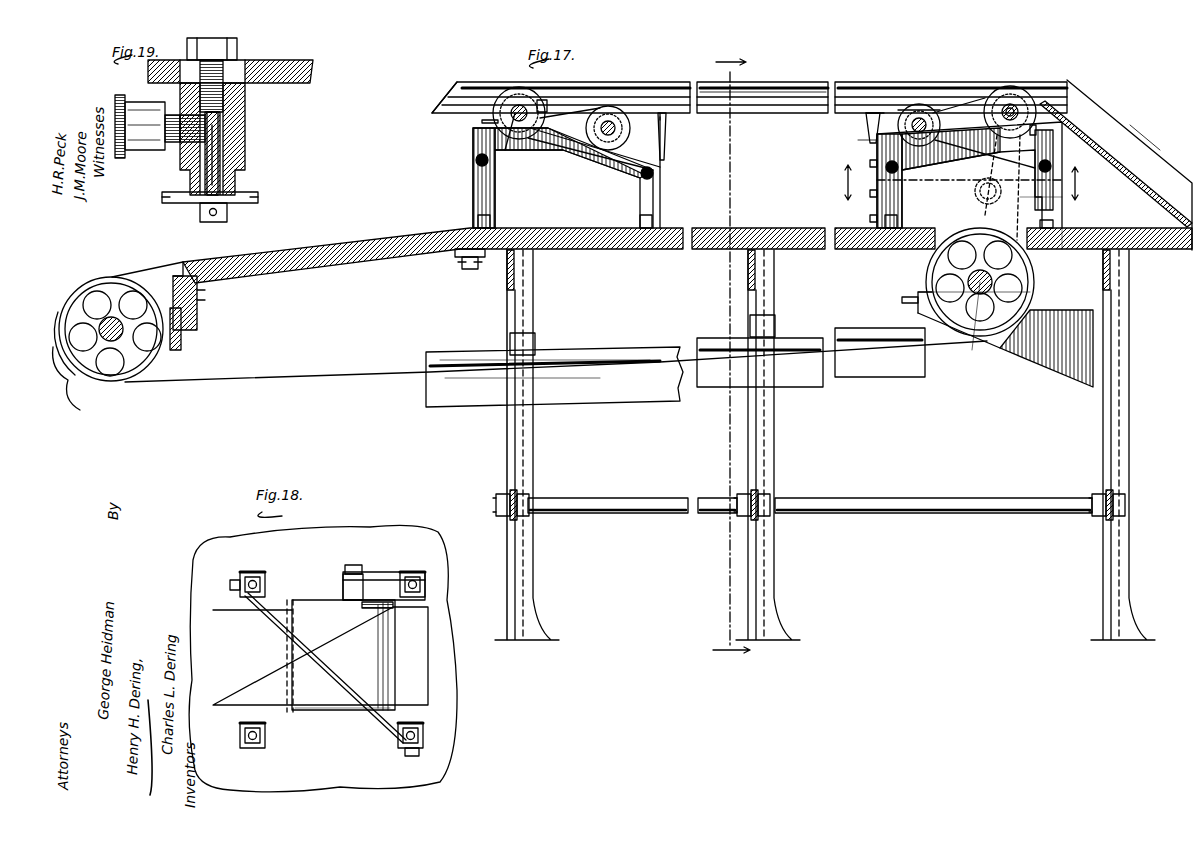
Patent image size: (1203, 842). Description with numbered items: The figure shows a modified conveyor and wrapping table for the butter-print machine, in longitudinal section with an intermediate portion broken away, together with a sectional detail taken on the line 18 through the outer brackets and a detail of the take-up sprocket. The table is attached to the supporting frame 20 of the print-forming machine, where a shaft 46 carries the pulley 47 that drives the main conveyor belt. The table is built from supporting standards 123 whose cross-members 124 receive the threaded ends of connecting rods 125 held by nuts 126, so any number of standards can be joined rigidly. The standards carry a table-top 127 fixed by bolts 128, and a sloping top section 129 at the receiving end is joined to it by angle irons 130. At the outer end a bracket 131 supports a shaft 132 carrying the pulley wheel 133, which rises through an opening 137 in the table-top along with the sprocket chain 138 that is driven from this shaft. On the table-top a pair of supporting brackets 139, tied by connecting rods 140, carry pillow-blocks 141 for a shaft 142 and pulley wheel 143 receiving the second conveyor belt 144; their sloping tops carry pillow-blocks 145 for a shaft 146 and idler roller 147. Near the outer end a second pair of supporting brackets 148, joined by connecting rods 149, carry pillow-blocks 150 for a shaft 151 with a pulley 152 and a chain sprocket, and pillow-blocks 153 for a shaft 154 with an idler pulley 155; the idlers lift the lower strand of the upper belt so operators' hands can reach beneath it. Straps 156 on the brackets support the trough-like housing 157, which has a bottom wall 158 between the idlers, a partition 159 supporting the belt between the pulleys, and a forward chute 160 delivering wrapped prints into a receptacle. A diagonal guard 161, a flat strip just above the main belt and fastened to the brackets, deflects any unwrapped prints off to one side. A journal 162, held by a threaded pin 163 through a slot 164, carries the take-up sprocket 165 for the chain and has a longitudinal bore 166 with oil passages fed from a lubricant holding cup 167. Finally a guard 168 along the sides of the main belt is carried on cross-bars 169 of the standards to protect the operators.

In FIG. 17, the section line 18 is at (960, 182).
In FIG. 17, the supporting frame 20 is at (80, 410).
In FIG. 17, the shaft 46 is at (113, 335).
In FIG. 17, the pulley 47 is at (155, 378).
In FIG. 17, the supporting standards 123 is at (534, 456).
In FIG. 17, the cross-members 124 is at (520, 490).
In FIG. 17, the connecting rods 125 is at (612, 498).
In FIG. 17, the nuts 126 is at (497, 500).
In FIG. 17, the table-top 127 is at (688, 228).
In FIG. 18, the table-top 127 is at (460, 690).
In FIG. 17, the bolts 128 is at (535, 262).
In FIG. 17, the top section 129 is at (380, 249).
In FIG. 17, the angle irons 130 is at (468, 270).
In FIG. 17, the bracket 131 is at (1052, 350).
In FIG. 17, the shaft 132 is at (976, 336).
In FIG. 17, the pulley wheel 133 is at (950, 330).
In FIG. 18, the pulley wheel 133 is at (345, 712).
In FIG. 17, the opening 137 is at (1045, 249).
In FIG. 18, the opening 137 is at (430, 645).
In FIG. 17, the sprocket chain 138 is at (1030, 226).
In FIG. 18, the sprocket chain 138 is at (425, 600).
In FIG. 17, the supporting brackets 139 is at (473, 195).
In FIG. 17, the connecting rods 140 is at (476, 161).
In FIG. 17, the pillow-blocks 141 is at (482, 121).
In FIG. 17, the shaft 142 is at (505, 150).
In FIG. 17, the pulley wheel 143 is at (510, 95).
In FIG. 17, the second conveyor belt 144 is at (650, 78).
In FIG. 17, the pillow-blocks 145 is at (594, 150).
In FIG. 17, the shaft 146 is at (590, 160).
In FIG. 17, the idler roller 147 is at (608, 150).
In FIG. 19, the supporting brackets 148 is at (312, 83).
In FIG. 17, the supporting brackets 148 is at (1036, 130).
In FIG. 18, the supporting brackets 148 is at (245, 572).
In FIG. 17, the connecting rods 149 is at (1050, 165).
In FIG. 17, the pillow-blocks 150 is at (960, 110).
In FIG. 17, the shaft 151 is at (1012, 105).
In FIG. 17, the pulley 152 is at (1015, 95).
In FIG. 17, the pillow-blocks 153 is at (853, 140).
In FIG. 17, the shaft 154 is at (912, 113).
In FIG. 17, the idler pulley 155 is at (918, 118).
In FIG. 17, the straps 156 is at (666, 140).
In FIG. 18, the straps 156 is at (220, 620).
In FIG. 17, the housing 157 is at (435, 98).
In FIG. 17, the bottom wall 158 is at (760, 113).
In FIG. 17, the partition 159 is at (870, 113).
In FIG. 17, the chute 160 is at (1150, 165).
In FIG. 17, the guard 161 is at (877, 205).
In FIG. 18, the guard 161 is at (265, 598).
In FIG. 19, the journal 162 is at (246, 145).
In FIG. 18, the journal 162 is at (343, 590).
In FIG. 19, the threaded pin 163 is at (246, 100).
In FIG. 19, the slot 164 is at (250, 61).
In FIG. 19, the sprocket 165 is at (255, 198).
In FIG. 17, the sprocket 165 is at (975, 191).
In FIG. 18, the sprocket 165 is at (355, 608).
In FIG. 19, the longitudinal bore 166 is at (222, 130).
In FIG. 19, the lubricant holding cup 167 is at (158, 152).
In FIG. 18, the lubricant holding cup 167 is at (345, 568).
In FIG. 17, the guard 168 is at (678, 347).
In FIG. 17, the cross-bars 169 is at (535, 338).